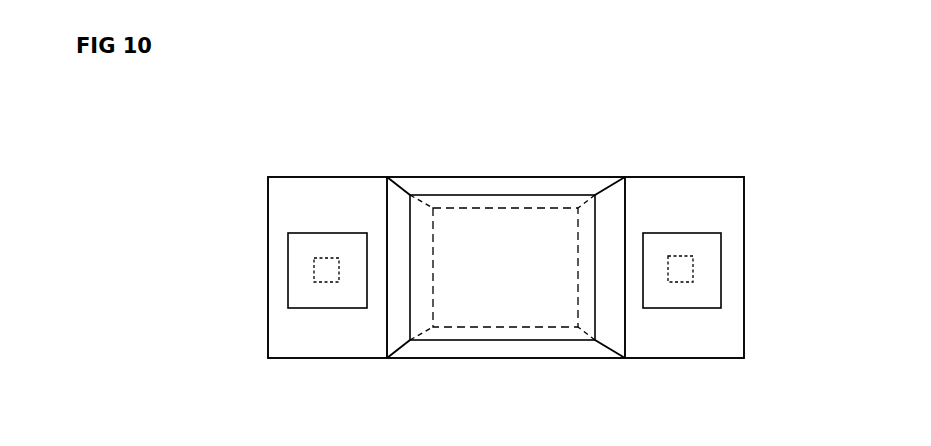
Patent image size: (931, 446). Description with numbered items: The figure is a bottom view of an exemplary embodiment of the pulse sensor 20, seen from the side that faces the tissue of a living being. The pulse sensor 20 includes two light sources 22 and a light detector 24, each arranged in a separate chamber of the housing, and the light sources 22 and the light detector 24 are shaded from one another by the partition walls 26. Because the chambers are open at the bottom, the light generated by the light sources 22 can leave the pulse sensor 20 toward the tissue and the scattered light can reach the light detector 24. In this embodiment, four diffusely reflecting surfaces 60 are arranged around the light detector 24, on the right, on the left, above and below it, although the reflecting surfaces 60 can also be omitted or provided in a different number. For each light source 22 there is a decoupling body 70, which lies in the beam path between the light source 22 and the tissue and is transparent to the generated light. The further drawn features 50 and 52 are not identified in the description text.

The pulse sensor 20 is at (260, 258).
The light source 22 is at (323, 258).
The light detector 24 is at (507, 212).
The partition wall 26 is at (386, 196).
The central body 50 is at (470, 168).
The bottom edge of cavity 52 is at (492, 328).
The diffusely reflecting surface 60 is at (401, 178).
The decoupling body 70 is at (296, 296).